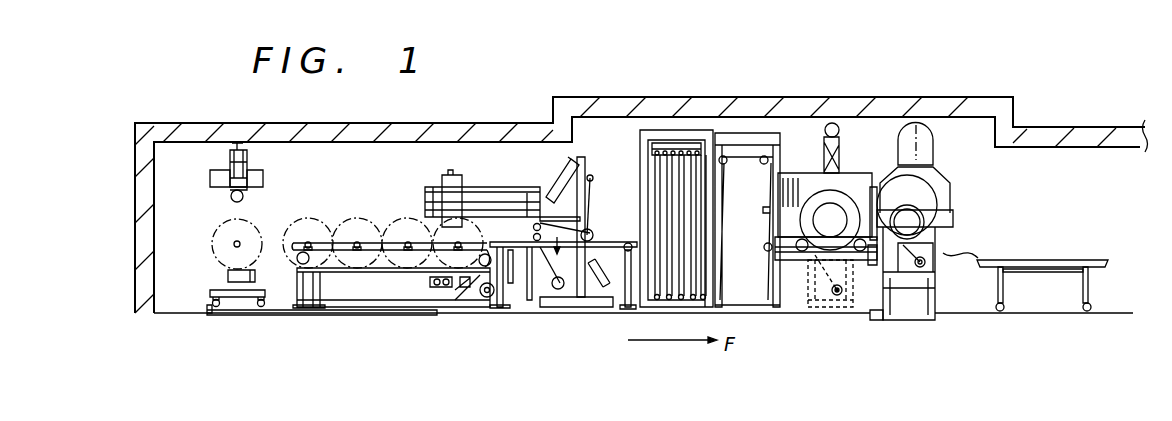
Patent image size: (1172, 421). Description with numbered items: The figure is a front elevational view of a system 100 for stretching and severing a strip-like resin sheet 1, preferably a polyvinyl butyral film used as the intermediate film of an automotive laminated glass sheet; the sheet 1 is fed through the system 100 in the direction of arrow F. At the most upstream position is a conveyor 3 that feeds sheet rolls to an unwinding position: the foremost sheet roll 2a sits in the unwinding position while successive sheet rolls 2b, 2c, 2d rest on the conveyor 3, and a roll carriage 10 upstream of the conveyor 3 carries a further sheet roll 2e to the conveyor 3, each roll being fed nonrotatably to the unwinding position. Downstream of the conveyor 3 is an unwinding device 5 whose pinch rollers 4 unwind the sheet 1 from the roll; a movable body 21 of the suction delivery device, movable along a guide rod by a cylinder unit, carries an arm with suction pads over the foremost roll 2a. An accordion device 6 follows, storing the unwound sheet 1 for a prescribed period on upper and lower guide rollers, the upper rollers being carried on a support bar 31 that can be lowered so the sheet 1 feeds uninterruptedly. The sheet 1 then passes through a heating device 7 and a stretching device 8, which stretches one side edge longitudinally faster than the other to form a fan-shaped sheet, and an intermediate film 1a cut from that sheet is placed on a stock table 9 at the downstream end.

The stretching and severing system 100 is at (900, 75).
The strip-like resin sheet 1 is at (495, 193).
The intermediate film 1a is at (978, 257).
The foremost sheet roll 2a is at (442, 237).
The sheet roll 2b is at (410, 313).
The sheet roll 2c is at (365, 228).
The sheet roll 2d is at (310, 228).
The sheet roll 2e is at (218, 238).
The conveyor 3 is at (378, 279).
The pinch rollers 4 is at (537, 225).
The unwinding device 5 is at (560, 288).
The accordion device 6 is at (696, 247).
The heating device 7 is at (848, 200).
The stretching device 8 is at (925, 198).
The stock table 9 is at (1040, 270).
The roll carriage 10 is at (236, 298).
The movable body 21 is at (456, 178).
The support bar 31 is at (679, 150).